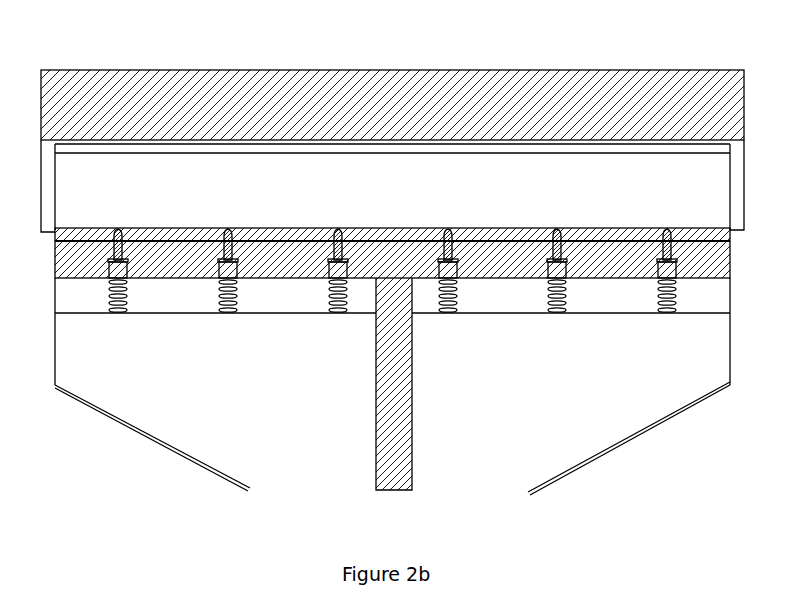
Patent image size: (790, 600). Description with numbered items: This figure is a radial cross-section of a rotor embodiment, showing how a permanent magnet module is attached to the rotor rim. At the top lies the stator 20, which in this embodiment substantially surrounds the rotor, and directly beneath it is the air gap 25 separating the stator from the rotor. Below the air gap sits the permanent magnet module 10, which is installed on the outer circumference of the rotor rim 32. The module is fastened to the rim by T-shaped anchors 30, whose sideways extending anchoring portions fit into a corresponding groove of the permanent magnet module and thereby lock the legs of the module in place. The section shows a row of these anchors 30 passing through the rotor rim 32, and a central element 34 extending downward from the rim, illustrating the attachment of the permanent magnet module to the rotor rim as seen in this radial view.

The stator 20 is at (347, 100).
The air gap 25 is at (243, 152).
The permanent magnet module 10 is at (92, 193).
The rotor rim 32 is at (72, 257).
The T-shaped anchor 30 is at (118, 264).
The central stem 34 is at (390, 460).